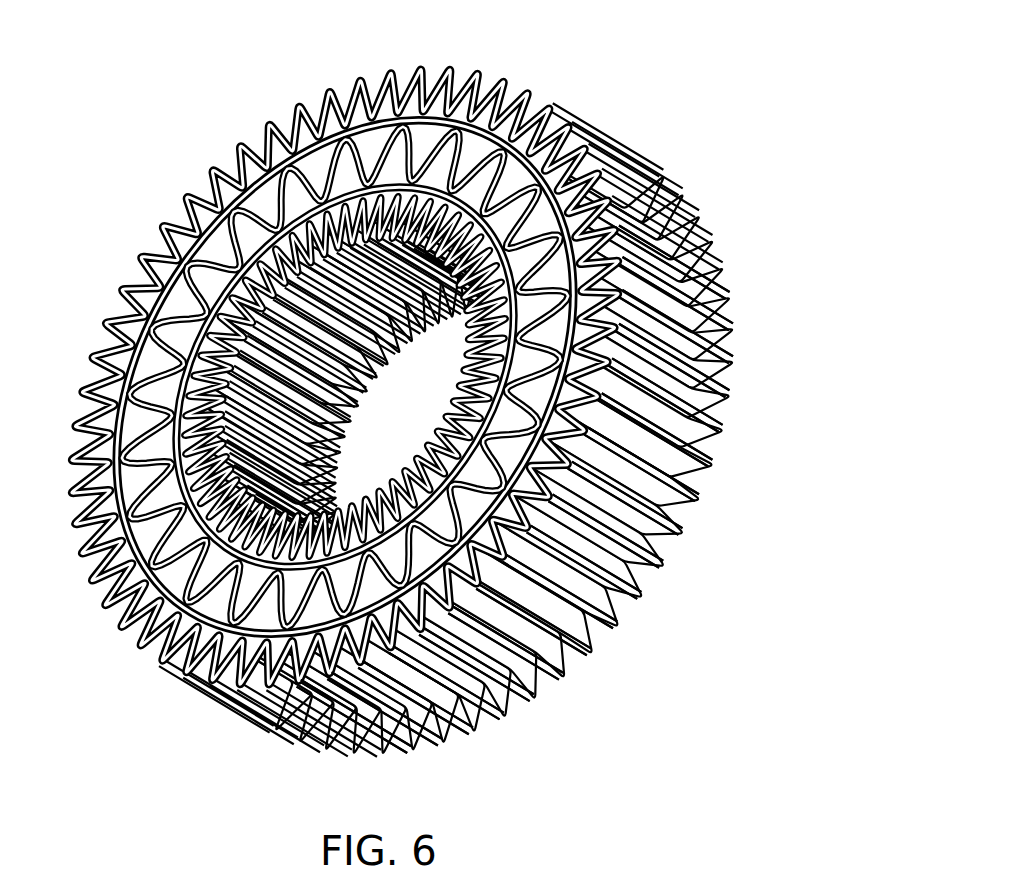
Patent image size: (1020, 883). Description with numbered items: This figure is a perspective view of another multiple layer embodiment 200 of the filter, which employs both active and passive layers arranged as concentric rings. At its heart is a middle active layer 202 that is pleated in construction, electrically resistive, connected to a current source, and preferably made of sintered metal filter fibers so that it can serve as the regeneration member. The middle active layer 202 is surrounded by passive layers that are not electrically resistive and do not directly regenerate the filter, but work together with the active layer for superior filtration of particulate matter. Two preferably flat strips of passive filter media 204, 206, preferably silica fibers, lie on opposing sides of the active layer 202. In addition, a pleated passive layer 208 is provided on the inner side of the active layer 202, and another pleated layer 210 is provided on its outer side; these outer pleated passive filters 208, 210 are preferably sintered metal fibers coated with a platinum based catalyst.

The multiple layer embodiment 200 is at (453, 387).
The middle active layer 202 is at (345, 377).
The flat strip of passive filter media 204 is at (345, 376).
The flat strip of passive filter media 206 is at (345, 377).
The pleated passive layer 208 is at (446, 430).
The pleated layer 210 is at (655, 370).